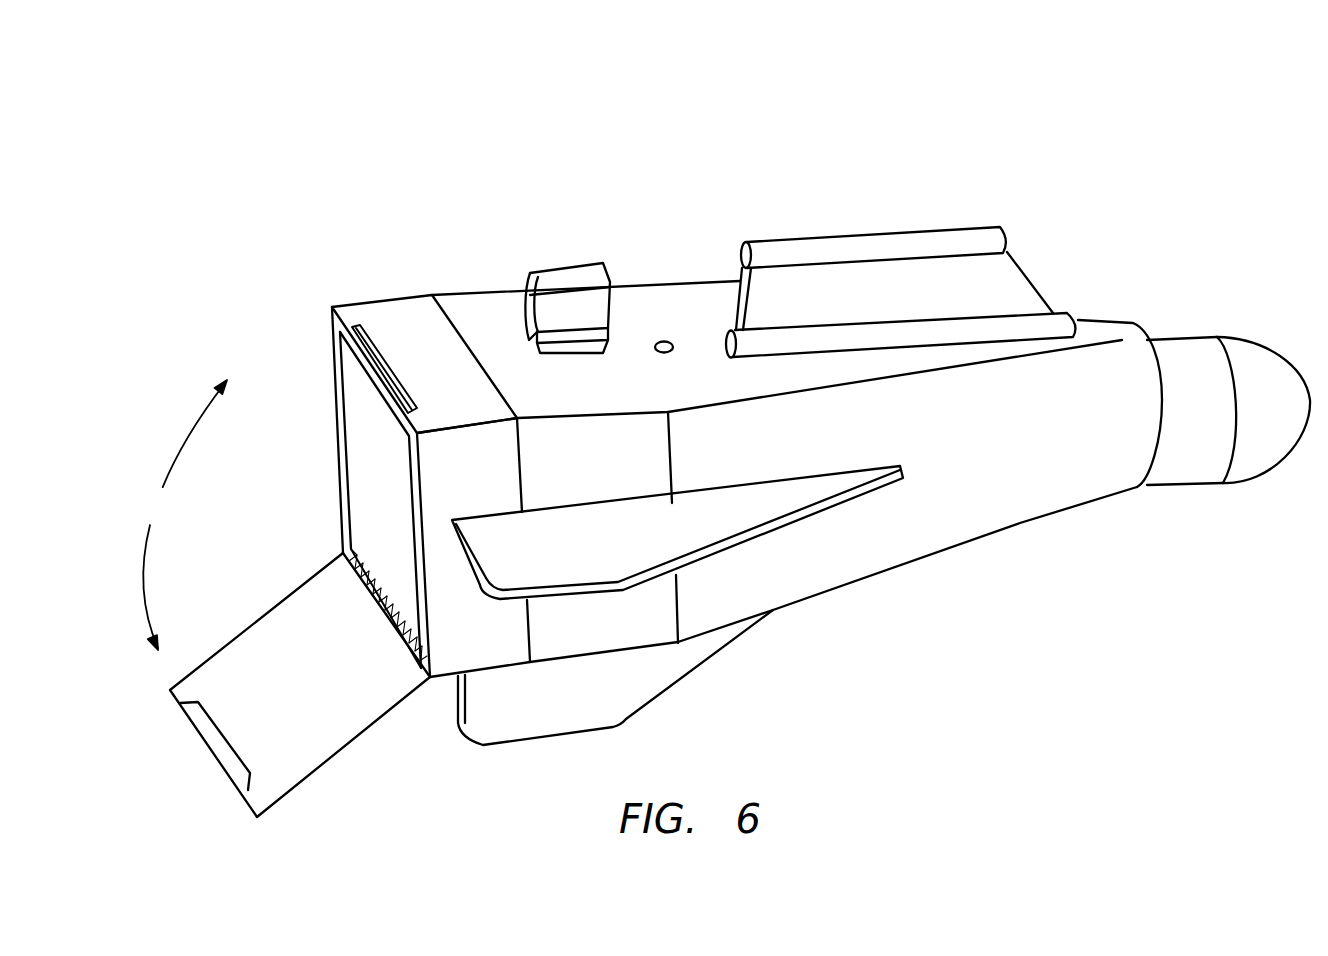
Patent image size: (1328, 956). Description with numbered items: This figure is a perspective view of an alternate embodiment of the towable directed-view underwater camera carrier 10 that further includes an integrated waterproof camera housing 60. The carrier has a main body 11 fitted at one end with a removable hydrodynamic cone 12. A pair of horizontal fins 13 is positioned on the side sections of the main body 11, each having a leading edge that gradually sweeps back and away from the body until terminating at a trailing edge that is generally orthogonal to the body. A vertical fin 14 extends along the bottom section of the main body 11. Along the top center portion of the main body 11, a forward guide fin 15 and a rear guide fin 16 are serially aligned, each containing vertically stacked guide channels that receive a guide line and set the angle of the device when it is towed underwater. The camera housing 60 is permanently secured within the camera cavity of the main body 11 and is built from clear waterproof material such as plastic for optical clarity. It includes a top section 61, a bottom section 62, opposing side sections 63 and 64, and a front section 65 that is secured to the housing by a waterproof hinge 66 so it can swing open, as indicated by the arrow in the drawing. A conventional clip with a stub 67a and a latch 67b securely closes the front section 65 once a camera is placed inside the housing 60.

The towable directed-view underwater camera carrier 10 is at (722, 432).
The main body 11 is at (1013, 503).
The removable hydrodynamic cone 12 is at (1285, 418).
The horizontal fin 13 is at (606, 564).
The vertical fin 14 is at (546, 720).
The forward guide fin 15 is at (862, 297).
The rear guide fin 16 is at (583, 313).
The camera housing 60 is at (372, 290).
The top section 61 is at (458, 387).
The bottom section 62 is at (398, 570).
The side section 63 is at (375, 440).
The side section 64 is at (486, 494).
The front section 65 is at (274, 703).
The waterproof hinge 66 is at (357, 578).
The stub 67a is at (382, 362).
The latch 67b is at (230, 760).